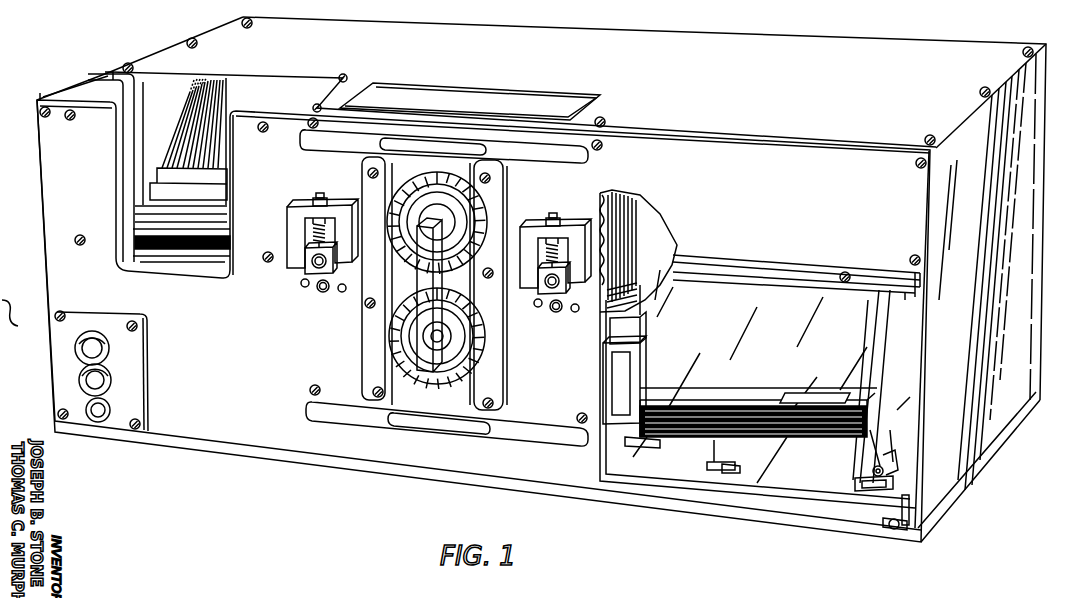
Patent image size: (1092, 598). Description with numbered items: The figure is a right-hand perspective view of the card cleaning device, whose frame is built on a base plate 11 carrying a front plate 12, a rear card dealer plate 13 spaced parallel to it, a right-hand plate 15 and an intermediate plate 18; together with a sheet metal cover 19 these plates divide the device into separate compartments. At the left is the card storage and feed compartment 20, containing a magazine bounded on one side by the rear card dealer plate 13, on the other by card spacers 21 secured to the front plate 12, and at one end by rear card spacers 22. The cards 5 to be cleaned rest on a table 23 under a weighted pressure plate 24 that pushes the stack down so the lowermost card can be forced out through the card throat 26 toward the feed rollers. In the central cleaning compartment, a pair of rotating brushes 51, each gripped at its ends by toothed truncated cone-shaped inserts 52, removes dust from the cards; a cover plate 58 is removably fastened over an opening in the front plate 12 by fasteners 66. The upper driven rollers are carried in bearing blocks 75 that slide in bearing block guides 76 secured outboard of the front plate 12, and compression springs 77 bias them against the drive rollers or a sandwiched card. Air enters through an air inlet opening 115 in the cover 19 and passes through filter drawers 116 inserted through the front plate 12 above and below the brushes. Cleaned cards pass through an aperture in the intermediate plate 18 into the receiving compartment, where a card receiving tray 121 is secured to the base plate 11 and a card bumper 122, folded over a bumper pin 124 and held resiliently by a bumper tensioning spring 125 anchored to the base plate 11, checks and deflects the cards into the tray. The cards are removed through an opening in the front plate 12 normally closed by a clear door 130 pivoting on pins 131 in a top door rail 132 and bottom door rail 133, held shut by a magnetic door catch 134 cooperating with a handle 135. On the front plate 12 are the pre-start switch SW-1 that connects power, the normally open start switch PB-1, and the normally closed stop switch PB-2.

The cards 5 is at (725, 397).
The base plate 11 is at (735, 514).
The front plate 12 is at (55, 172).
The rear card dealer plate 13 is at (232, 96).
The right-hand plate 15 is at (1031, 220).
The intermediate plate 18 is at (613, 216).
The sheet metal cover 19 is at (806, 46).
The card storage and feed compartment 20 is at (190, 95).
The card spacers 21 is at (107, 92).
The rear card spacers 22 is at (110, 85).
The table 23 is at (220, 262).
The weighted pressure plate 24 is at (148, 187).
The card throat 26 is at (617, 271).
The brushes 51 is at (460, 172).
The truncated cone-shaped inserts 52 is at (467, 202).
The cover plate 58 is at (470, 397).
The fasteners 66 is at (365, 304).
The bearing blocks 75 is at (306, 268).
The bearing block guides 76 is at (290, 240).
The compression springs 77 is at (320, 228).
The air inlet opening 115 is at (450, 100).
The filter drawers 116 is at (307, 145).
The card receiving tray 121 is at (670, 440).
The card bumper 122 is at (876, 344).
The bumper pin 124 is at (848, 478).
The bumper tensioning spring 125 is at (886, 472).
The door 130 is at (804, 320).
The pins 131 is at (907, 293).
The top door rail 132 is at (915, 278).
The bottom door rail 133 is at (903, 532).
The magnetic door catch 134 is at (641, 331).
The handle 135 is at (617, 377).
The push button start switch PB-1 is at (114, 379).
The push button stop switch PB-2 is at (112, 347).
The pre-start switch SW-1 is at (112, 411).